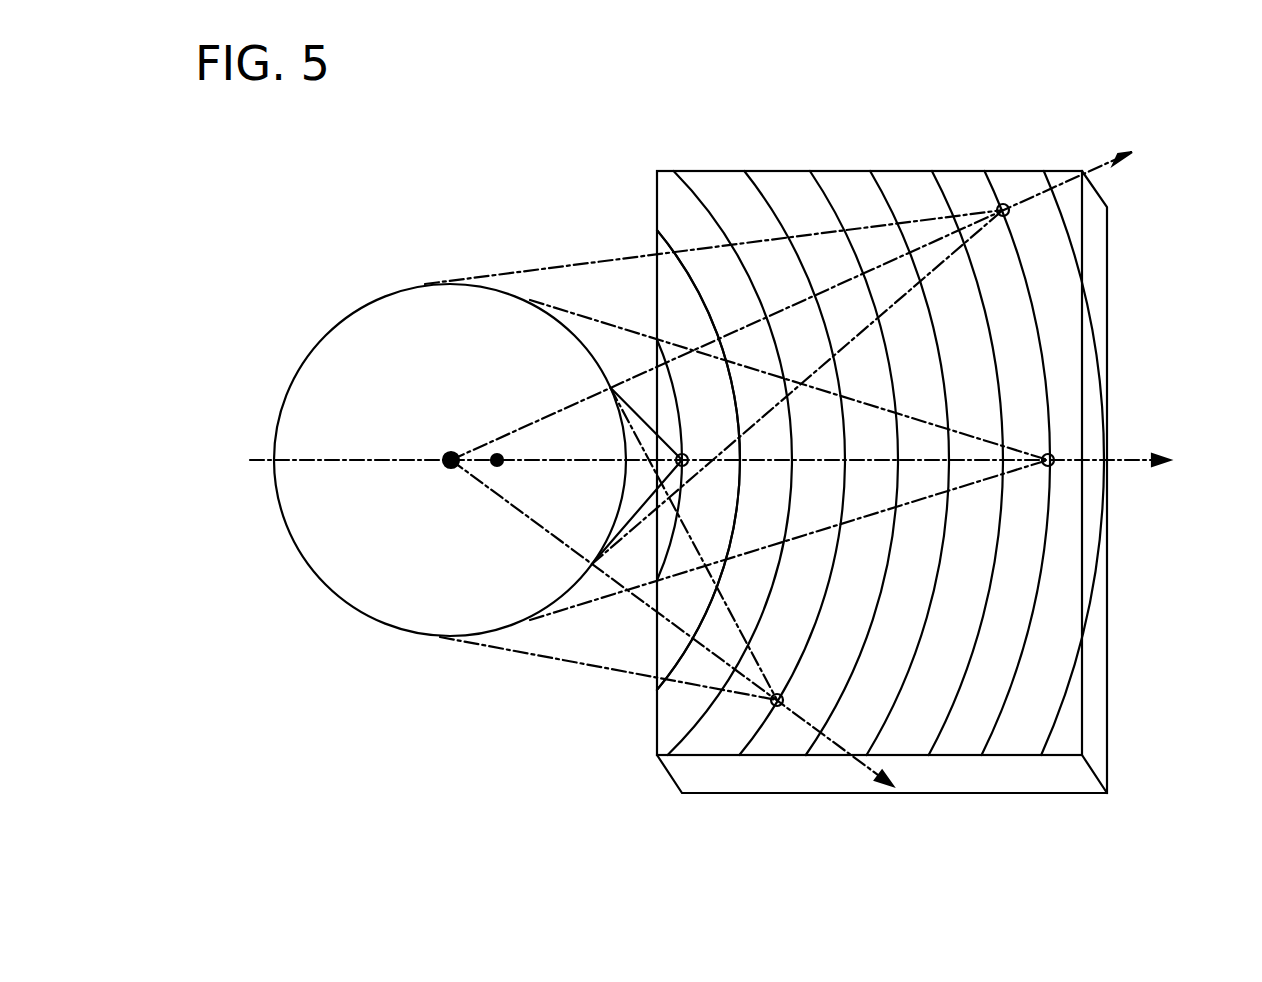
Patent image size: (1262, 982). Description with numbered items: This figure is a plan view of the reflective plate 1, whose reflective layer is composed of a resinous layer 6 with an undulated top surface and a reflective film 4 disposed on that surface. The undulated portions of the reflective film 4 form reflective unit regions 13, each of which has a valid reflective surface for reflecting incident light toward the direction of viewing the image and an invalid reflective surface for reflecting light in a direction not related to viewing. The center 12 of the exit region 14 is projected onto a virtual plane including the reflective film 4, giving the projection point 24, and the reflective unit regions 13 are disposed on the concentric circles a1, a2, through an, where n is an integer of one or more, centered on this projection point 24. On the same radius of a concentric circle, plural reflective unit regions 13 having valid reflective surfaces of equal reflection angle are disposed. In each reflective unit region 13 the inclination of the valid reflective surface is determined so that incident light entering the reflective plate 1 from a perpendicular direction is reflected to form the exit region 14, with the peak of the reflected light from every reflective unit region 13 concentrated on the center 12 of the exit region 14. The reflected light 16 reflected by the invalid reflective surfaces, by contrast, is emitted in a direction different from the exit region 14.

The reflective plate 1 is at (1250, 133).
The reflective film 4 is at (1023, 733).
The resinous layer 6 is at (1100, 233).
The center of the exit region 12 is at (450, 468).
The reflective unit region 13 is at (777, 708).
The exit region 14 is at (430, 312).
The reflected light 16 is at (833, 742).
The projection point 24 is at (497, 466).
The concentric circle a1 is at (670, 548).
The concentric circle a2 is at (684, 272).
The concentric circle an is at (1030, 613).